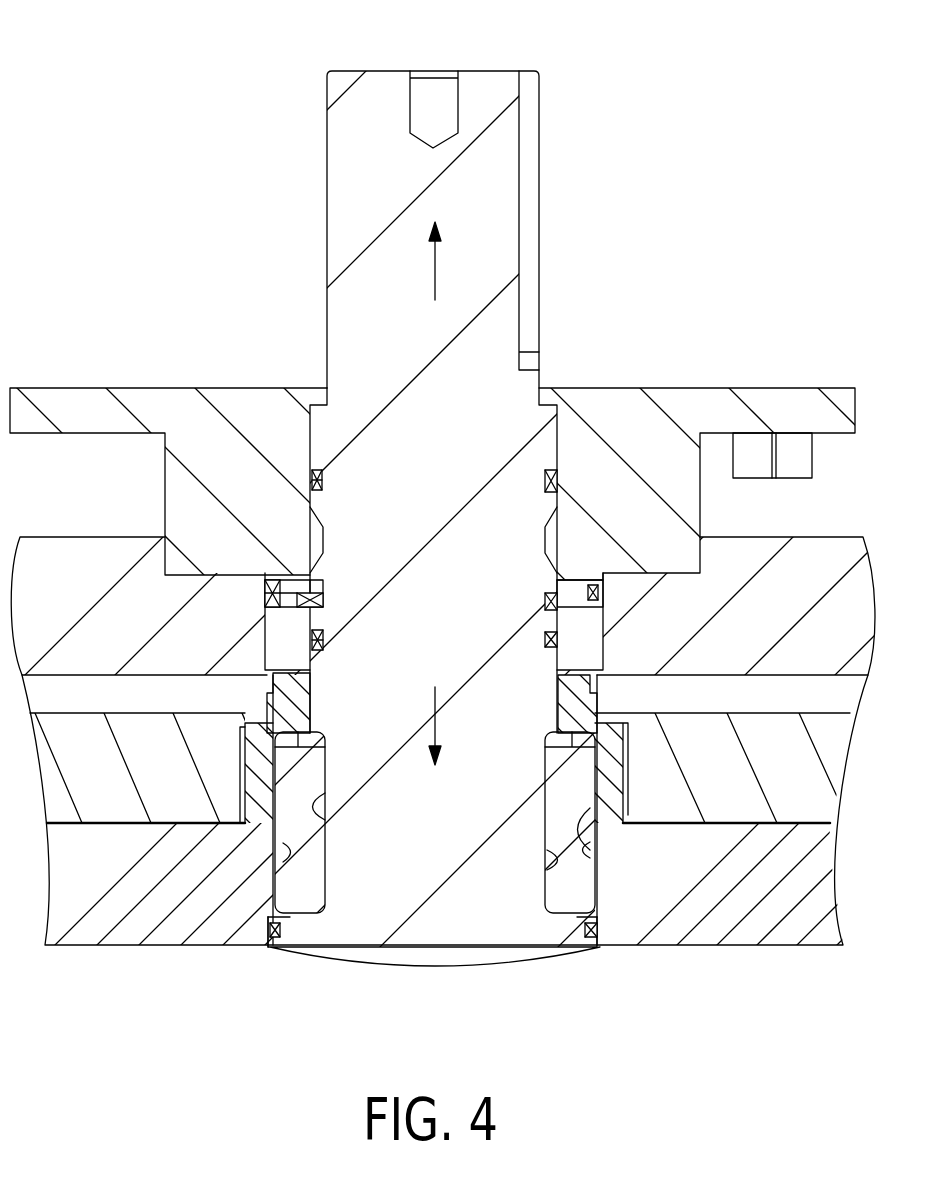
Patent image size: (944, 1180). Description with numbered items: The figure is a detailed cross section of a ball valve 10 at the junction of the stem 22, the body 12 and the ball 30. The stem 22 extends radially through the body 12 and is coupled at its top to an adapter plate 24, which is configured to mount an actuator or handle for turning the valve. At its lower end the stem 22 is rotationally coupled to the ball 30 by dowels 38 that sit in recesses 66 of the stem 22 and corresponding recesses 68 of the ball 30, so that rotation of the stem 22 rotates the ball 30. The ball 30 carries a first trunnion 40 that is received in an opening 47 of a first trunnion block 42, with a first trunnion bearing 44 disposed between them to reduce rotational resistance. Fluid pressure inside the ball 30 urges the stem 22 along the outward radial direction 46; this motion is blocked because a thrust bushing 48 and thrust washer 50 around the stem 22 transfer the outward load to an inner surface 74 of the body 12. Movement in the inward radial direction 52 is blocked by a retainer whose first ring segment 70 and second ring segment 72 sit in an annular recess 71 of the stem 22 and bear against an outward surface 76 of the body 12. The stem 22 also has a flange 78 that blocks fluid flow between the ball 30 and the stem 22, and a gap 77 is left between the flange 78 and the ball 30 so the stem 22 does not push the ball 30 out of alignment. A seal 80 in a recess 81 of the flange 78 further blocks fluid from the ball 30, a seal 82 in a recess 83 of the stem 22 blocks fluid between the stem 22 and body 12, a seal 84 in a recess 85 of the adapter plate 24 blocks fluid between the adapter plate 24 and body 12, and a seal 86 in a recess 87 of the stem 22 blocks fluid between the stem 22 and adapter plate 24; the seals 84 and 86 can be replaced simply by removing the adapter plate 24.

The ball valve 10 is at (97, 140).
The body 12 is at (810, 537).
The stem 22 is at (357, 182).
The adapter plate 24 is at (668, 387).
The ball 30 is at (135, 925).
The dowels 38 is at (300, 882).
The first trunnion 40 is at (245, 797).
The first trunnion block 42 is at (145, 783).
The first trunnion bearing 44 is at (240, 760).
The outward radial direction 46 is at (437, 268).
The opening 47 is at (628, 797).
The thrust bushing 48 is at (580, 703).
The thrust washer 50 is at (560, 650).
The inward radial direction 52 is at (437, 717).
The recesses 66 is at (325, 820).
The recesses 68 is at (283, 845).
The first ring segment 70 is at (312, 592).
The annular recess 71 is at (318, 596).
The second ring segment 72 is at (578, 590).
The inner surface 74 is at (290, 695).
The outward surface 76 is at (290, 604).
The gap 77 is at (590, 905).
The flange 78 is at (293, 943).
The seal 80 is at (268, 930).
The recess 81 is at (282, 932).
The seal 82 is at (323, 640).
The recess 83 is at (323, 648).
The seal 84 is at (266, 600).
The recess 85 is at (266, 592).
The seal 86 is at (323, 486).
The recess 87 is at (323, 476).